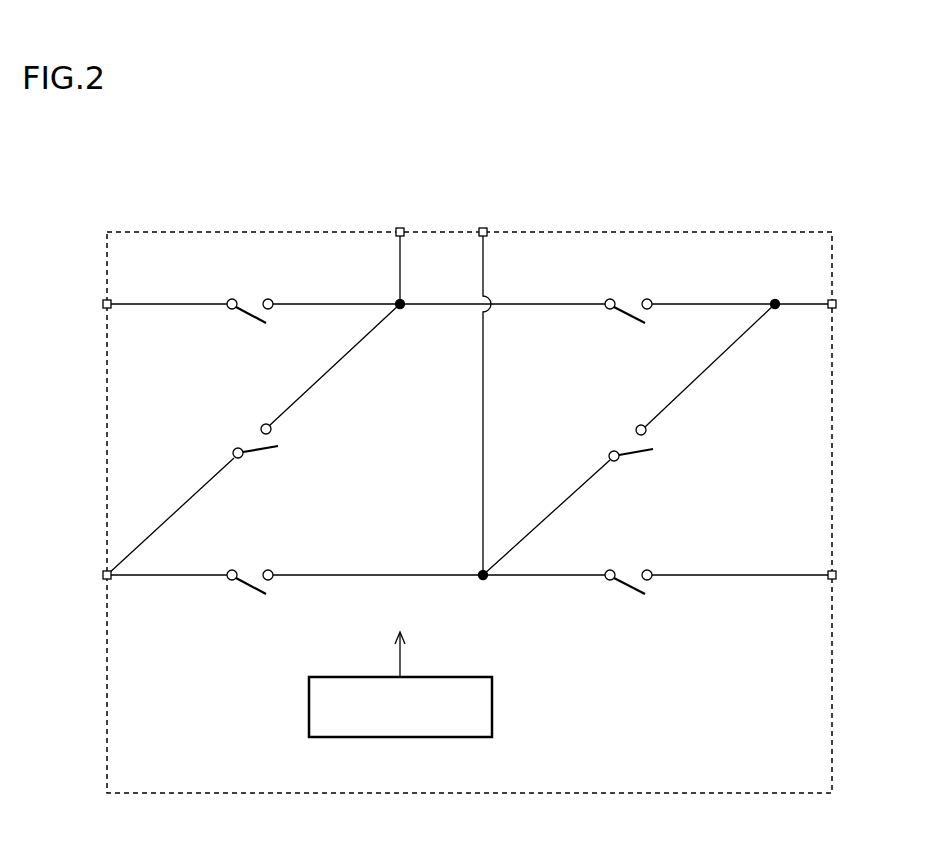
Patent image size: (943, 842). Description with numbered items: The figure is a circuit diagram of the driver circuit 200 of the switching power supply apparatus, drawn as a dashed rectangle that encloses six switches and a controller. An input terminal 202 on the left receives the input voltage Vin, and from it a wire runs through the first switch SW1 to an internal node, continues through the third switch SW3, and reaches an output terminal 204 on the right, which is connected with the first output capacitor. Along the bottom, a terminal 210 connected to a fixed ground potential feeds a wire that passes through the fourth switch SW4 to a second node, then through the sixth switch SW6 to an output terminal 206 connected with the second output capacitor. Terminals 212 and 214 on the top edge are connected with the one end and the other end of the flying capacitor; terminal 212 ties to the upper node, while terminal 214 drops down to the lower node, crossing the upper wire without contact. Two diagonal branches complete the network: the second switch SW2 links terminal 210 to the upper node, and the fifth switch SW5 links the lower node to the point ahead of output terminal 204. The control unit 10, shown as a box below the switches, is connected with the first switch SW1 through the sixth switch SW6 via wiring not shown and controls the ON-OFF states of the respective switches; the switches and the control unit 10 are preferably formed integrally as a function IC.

The driver circuit 200 is at (158, 232).
The input terminal 202 is at (103, 306).
The output terminal 204 is at (836, 306).
The output terminal 206 is at (836, 578).
The terminal 210 is at (103, 578).
The terminal 212 is at (398, 228).
The terminal 214 is at (486, 228).
The first switch SW1 is at (252, 302).
The second switch SW2 is at (253, 447).
The third switch SW3 is at (630, 302).
The fourth switch SW4 is at (277, 548).
The fifth switch SW5 is at (629, 448).
The sixth switch SW6 is at (655, 548).
The control unit 10 is at (492, 711).